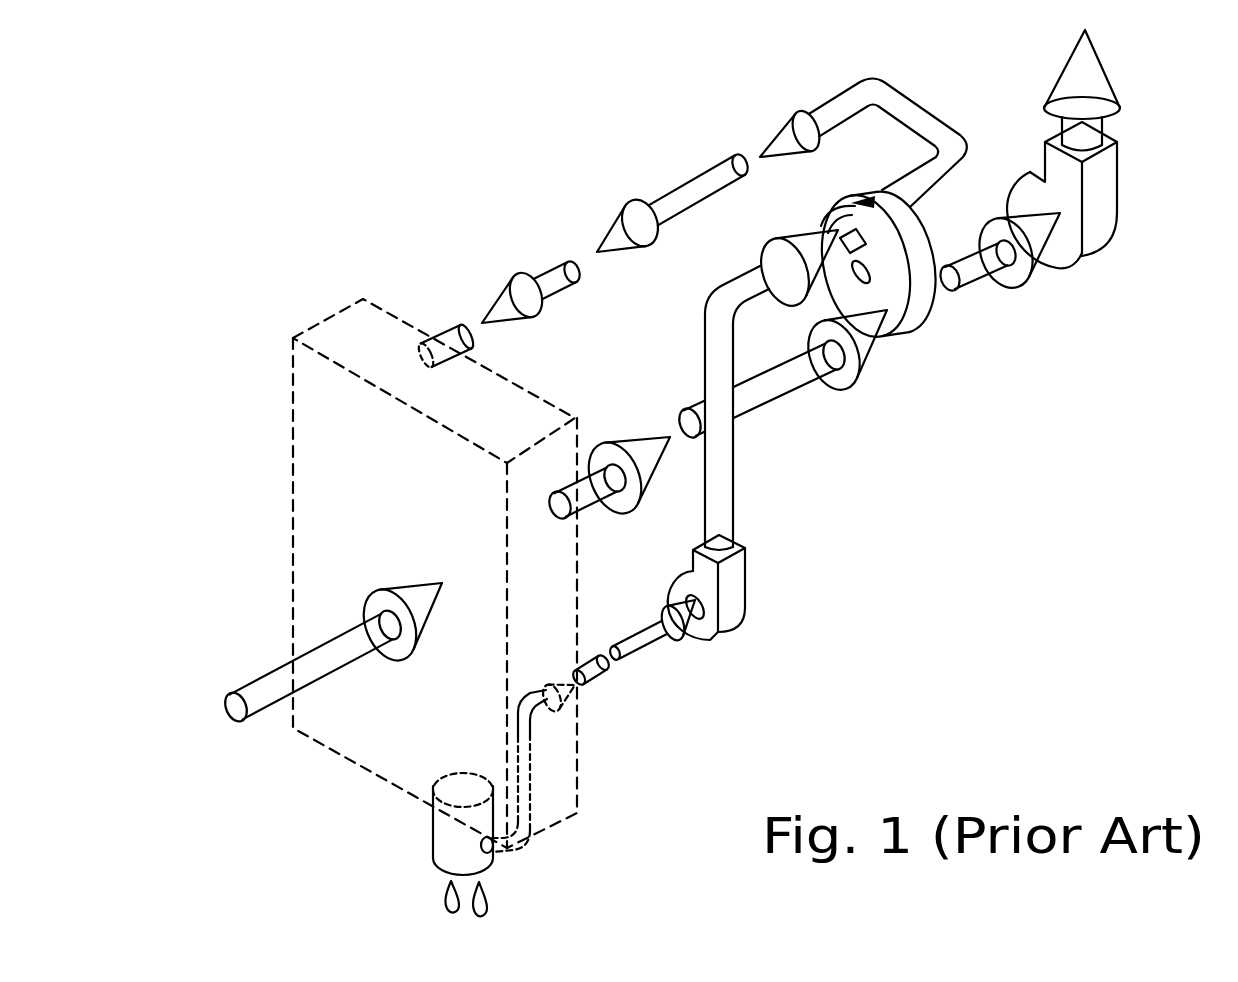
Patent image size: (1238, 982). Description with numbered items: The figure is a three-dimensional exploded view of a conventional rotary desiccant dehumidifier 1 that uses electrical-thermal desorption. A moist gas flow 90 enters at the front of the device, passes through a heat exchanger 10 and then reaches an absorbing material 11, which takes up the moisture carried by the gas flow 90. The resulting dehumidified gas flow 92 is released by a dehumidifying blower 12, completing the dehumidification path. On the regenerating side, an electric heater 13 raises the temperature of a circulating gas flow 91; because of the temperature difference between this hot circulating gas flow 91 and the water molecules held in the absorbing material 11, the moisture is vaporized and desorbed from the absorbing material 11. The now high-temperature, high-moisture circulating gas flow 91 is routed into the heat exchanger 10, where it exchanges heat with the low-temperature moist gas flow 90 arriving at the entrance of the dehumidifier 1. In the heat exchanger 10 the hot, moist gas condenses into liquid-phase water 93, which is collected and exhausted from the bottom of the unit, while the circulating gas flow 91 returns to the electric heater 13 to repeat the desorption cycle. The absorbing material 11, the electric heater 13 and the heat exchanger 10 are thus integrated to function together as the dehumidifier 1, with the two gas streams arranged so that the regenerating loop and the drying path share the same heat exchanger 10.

The rotary desiccant dehumidifier 1 is at (272, 152).
The heat exchanger 10 is at (350, 343).
The absorbing material 11 is at (903, 293).
The dehumidifying blower 12 is at (1107, 210).
The electric heater 13 is at (838, 203).
The moist gas flow 90 is at (325, 648).
The circulating gas flow 91 is at (548, 273).
The dehumidified gas flow 92 is at (978, 275).
The liquid-phase water 93 is at (483, 904).